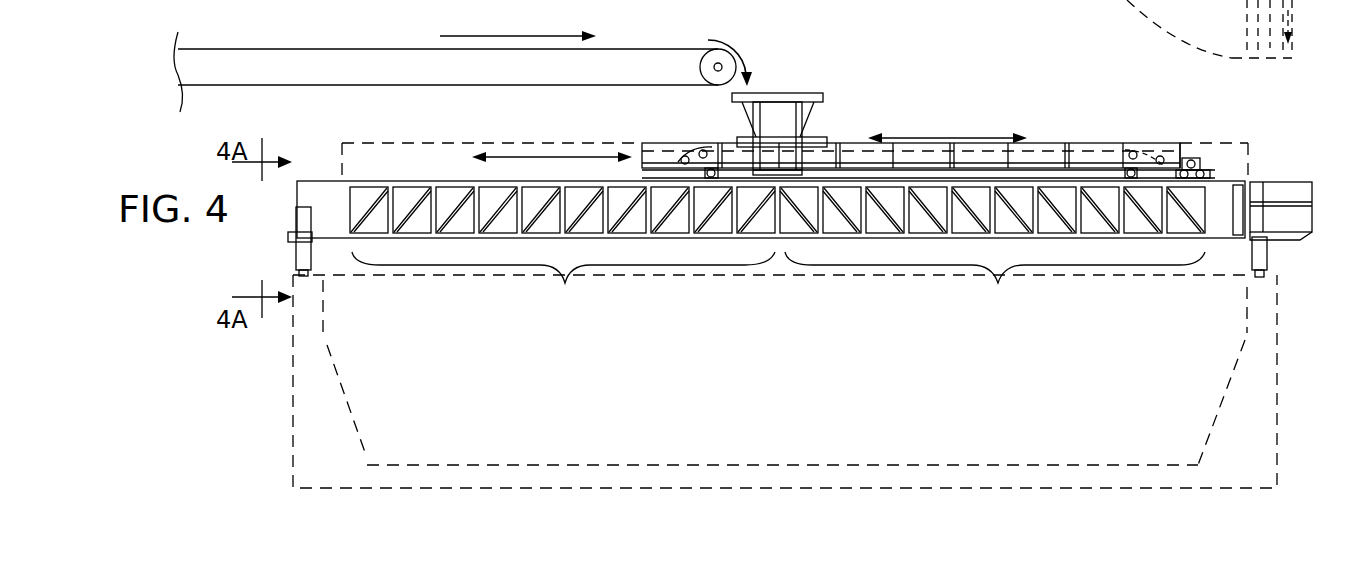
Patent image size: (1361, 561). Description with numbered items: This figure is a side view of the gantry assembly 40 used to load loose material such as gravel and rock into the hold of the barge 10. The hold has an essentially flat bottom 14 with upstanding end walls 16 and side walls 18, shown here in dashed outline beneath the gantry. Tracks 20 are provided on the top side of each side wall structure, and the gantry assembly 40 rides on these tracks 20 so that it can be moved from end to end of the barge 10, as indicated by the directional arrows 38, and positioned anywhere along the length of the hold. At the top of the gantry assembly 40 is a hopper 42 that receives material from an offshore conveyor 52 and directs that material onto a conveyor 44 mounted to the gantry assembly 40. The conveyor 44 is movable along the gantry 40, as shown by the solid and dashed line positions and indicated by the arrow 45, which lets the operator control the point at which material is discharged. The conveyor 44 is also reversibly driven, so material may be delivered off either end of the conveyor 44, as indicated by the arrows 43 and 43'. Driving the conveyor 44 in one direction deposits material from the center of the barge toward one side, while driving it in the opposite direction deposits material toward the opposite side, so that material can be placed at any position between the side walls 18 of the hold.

The barge 10 is at (1290, 315).
The flat bottom 14 is at (925, 463).
The end walls 16 is at (777, 376).
The side walls 18 is at (322, 320).
The tracks 20 is at (302, 277).
The directional arrows 38 is at (1231, 29).
The gantry assembly 40 is at (1228, 168).
The hopper 42 is at (808, 93).
The arrow 43 is at (663, 147).
The arrow 43' is at (1151, 142).
The conveyor 44 is at (448, 142).
The arrow 45 is at (560, 155).
The offshore conveyor 52 is at (398, 48).